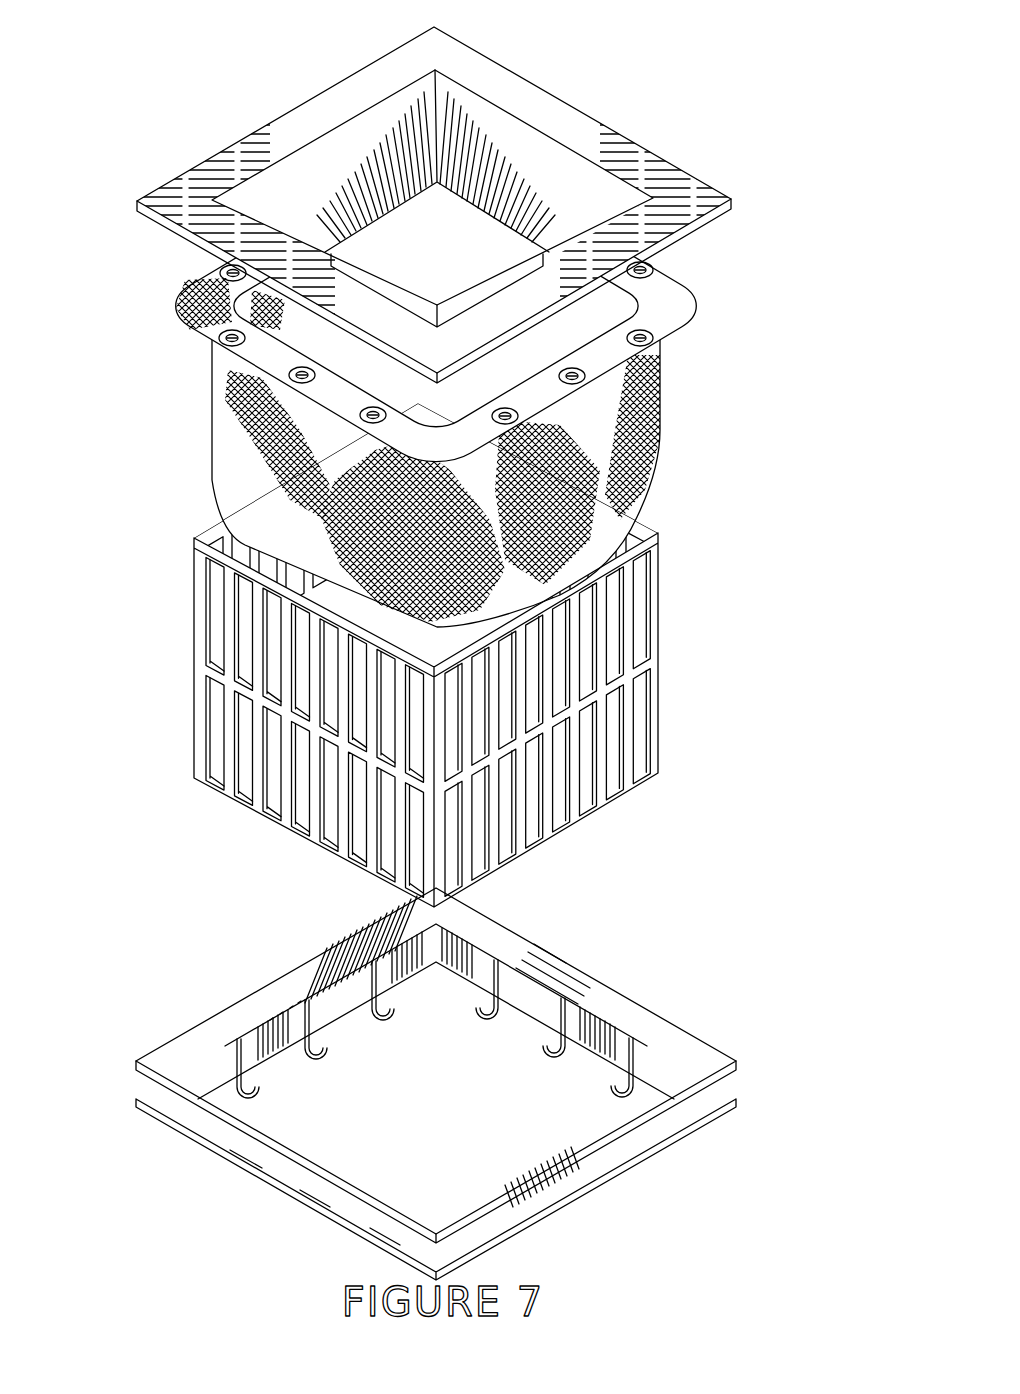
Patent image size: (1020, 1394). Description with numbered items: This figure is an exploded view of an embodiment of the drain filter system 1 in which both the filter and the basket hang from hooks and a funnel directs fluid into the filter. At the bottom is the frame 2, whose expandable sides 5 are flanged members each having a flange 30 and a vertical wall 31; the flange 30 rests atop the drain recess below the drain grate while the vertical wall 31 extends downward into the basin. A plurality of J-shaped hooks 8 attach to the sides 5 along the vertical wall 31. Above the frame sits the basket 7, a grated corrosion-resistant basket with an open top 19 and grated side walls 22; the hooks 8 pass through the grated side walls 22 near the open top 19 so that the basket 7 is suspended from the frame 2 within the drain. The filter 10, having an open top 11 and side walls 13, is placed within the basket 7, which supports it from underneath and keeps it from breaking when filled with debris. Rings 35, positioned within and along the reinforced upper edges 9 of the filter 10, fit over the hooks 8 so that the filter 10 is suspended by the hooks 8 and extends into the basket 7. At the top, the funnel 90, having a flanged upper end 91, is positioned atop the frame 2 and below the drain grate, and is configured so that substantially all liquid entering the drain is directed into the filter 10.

The drain filter system 1 is at (490, 201).
The frame 2 is at (431, 1084).
The sides 5 is at (190, 1046).
The basket 7 is at (435, 655).
The J-shaped hooks 8 is at (323, 1050).
The upper edges 9 is at (474, 483).
The filter 10 is at (562, 461).
The open top 11 is at (440, 305).
The side walls 13 is at (306, 466).
The open top 19 is at (431, 655).
The grated side walls 22 is at (606, 686).
The flange 30 is at (317, 960).
The vertical wall 31 is at (410, 993).
The female members 35 is at (226, 270).
The funnel 90 is at (575, 128).
The flanged upper end 91 is at (487, 78).